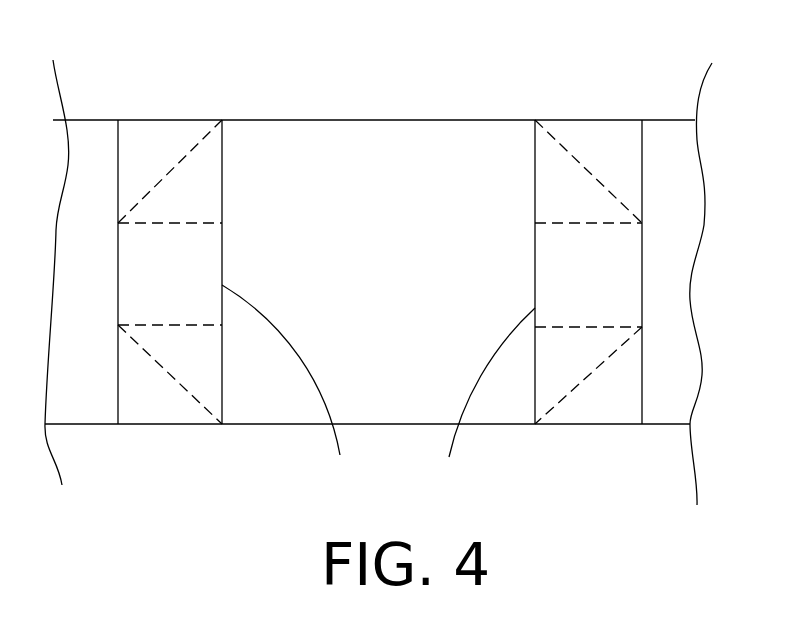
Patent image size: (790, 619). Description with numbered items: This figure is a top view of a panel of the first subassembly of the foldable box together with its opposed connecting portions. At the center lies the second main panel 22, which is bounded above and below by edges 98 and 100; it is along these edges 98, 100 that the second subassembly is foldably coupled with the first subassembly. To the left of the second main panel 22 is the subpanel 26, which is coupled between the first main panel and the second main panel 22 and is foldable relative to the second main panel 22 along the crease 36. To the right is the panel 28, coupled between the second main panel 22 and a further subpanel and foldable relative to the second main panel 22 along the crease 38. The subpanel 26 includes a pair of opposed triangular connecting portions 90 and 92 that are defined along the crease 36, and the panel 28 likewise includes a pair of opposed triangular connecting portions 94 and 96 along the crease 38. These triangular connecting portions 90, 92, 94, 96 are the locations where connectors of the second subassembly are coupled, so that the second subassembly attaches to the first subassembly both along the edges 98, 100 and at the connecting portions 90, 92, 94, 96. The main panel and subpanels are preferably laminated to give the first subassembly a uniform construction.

The second main panel 22 is at (415, 153).
The subpanel 26 is at (165, 120).
The panel 28 is at (630, 130).
The crease 36 is at (288, 384).
The crease 38 is at (488, 393).
The triangular connecting portion 90 is at (208, 177).
The triangular connecting portion 92 is at (198, 392).
The triangular connecting portion 94 is at (552, 167).
The triangular connecting portion 96 is at (586, 353).
The edge 98 is at (380, 120).
The edge 100 is at (293, 425).